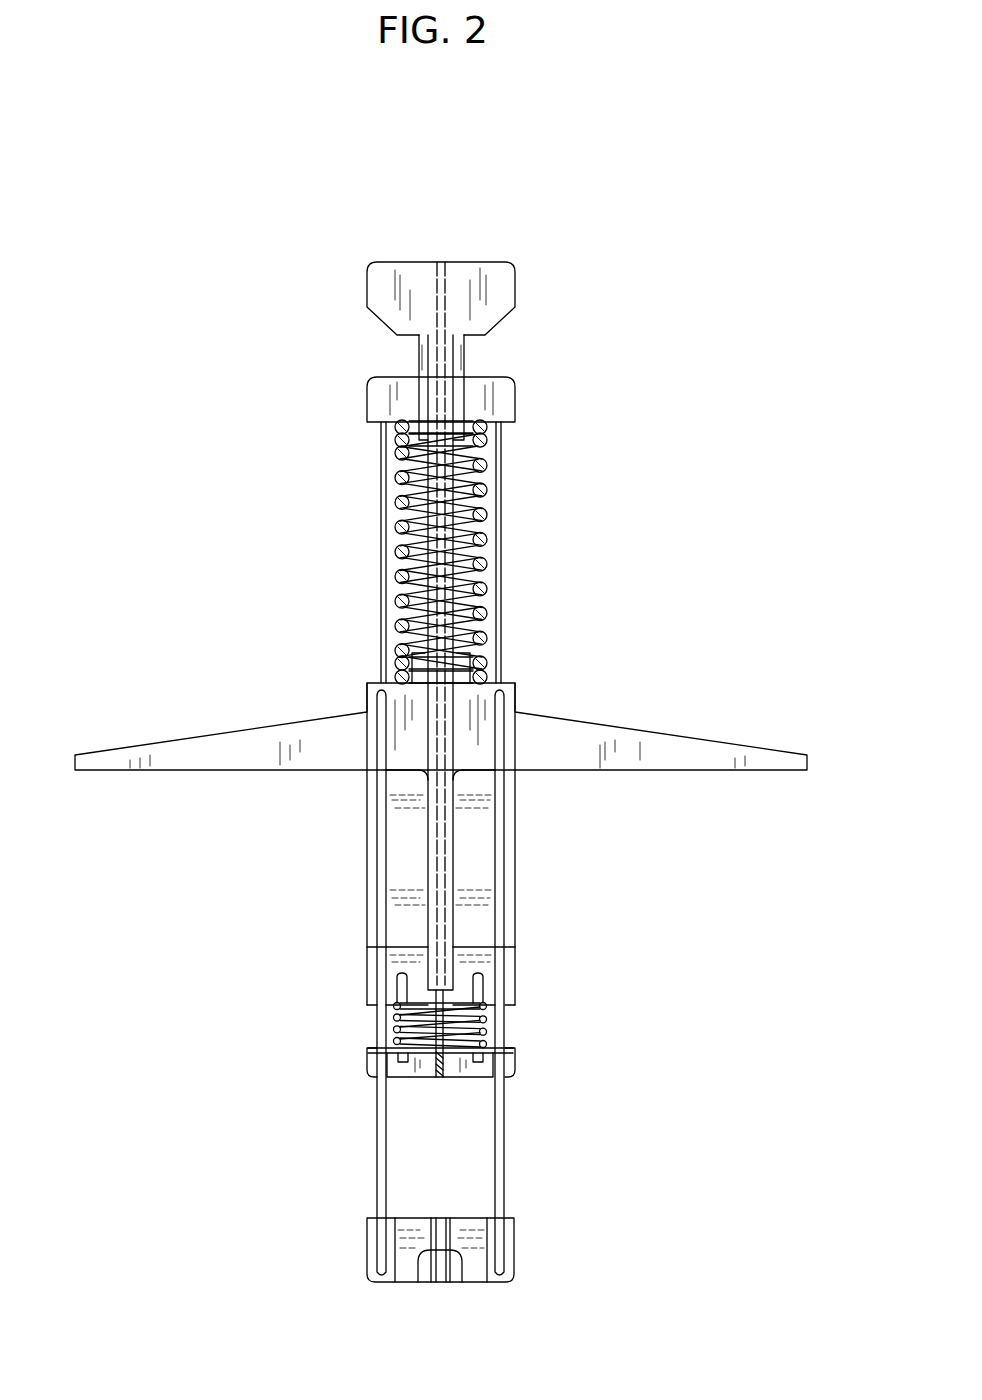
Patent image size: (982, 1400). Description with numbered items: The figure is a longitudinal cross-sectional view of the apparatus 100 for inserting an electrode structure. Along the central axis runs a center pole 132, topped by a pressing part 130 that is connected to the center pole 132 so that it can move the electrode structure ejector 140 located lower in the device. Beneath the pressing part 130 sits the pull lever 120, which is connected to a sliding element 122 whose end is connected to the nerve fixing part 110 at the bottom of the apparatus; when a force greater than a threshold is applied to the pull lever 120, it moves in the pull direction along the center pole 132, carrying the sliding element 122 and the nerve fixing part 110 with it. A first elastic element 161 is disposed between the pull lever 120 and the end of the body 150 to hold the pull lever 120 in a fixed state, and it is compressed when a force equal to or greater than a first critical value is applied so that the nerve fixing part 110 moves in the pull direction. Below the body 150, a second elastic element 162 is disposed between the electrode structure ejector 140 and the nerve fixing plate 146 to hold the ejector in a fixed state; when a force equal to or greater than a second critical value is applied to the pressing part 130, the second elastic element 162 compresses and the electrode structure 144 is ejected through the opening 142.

The apparatus for inserting an electrode structure 100 is at (172, 280).
The nerve fixing part 110 is at (510, 1262).
The pull lever 120 is at (653, 740).
The sliding element 122 is at (500, 1180).
The pressing part 130 is at (488, 268).
The center pole 132 is at (437, 833).
The electrode structure ejector 140 is at (508, 978).
The opening 142 is at (443, 1078).
The electrode structure 144 is at (434, 1061).
The nerve fixing plate 146 is at (373, 1063).
The body 150 is at (508, 893).
The first elastic element 161 is at (490, 468).
The second elastic element 162 is at (485, 1022).